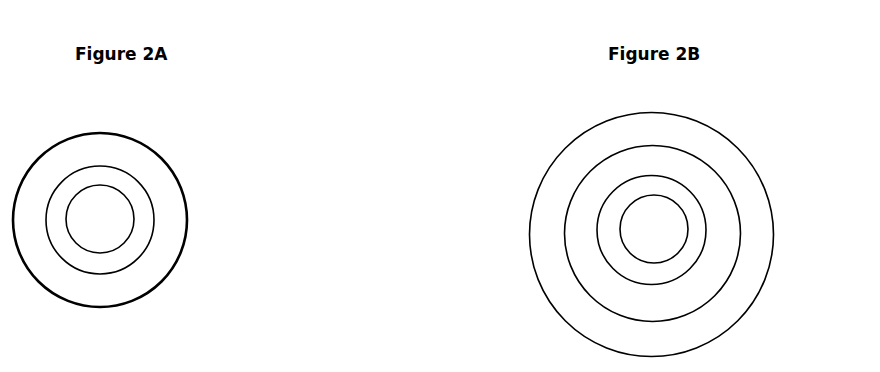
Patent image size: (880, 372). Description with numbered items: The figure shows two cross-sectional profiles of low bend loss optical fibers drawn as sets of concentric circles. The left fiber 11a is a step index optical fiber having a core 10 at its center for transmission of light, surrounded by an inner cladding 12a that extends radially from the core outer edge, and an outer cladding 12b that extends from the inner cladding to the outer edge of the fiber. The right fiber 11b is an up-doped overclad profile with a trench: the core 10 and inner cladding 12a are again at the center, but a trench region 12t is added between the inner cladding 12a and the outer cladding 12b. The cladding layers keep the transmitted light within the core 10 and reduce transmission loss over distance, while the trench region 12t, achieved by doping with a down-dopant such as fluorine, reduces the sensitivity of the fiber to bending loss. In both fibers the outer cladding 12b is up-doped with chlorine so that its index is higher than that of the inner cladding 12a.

In FIG. 2A, the core 10 is at (107, 203).
In FIG. 2B, the core 10 is at (648, 223).
In FIG. 2A, the optical fiber with single cladding (Figure 2A) 11a is at (190, 122).
In FIG. 2B, the optical fiber with trench cladding (Figure 2B) 11b is at (553, 133).
In FIG. 2A, the inner cladding 12a is at (143, 223).
In FIG. 2B, the inner cladding 12a is at (615, 242).
In FIG. 2B, the trench region 12t is at (627, 288).
In FIG. 2A, the outer cladding 12b is at (143, 273).
In FIG. 2B, the outer cladding 12b is at (648, 337).